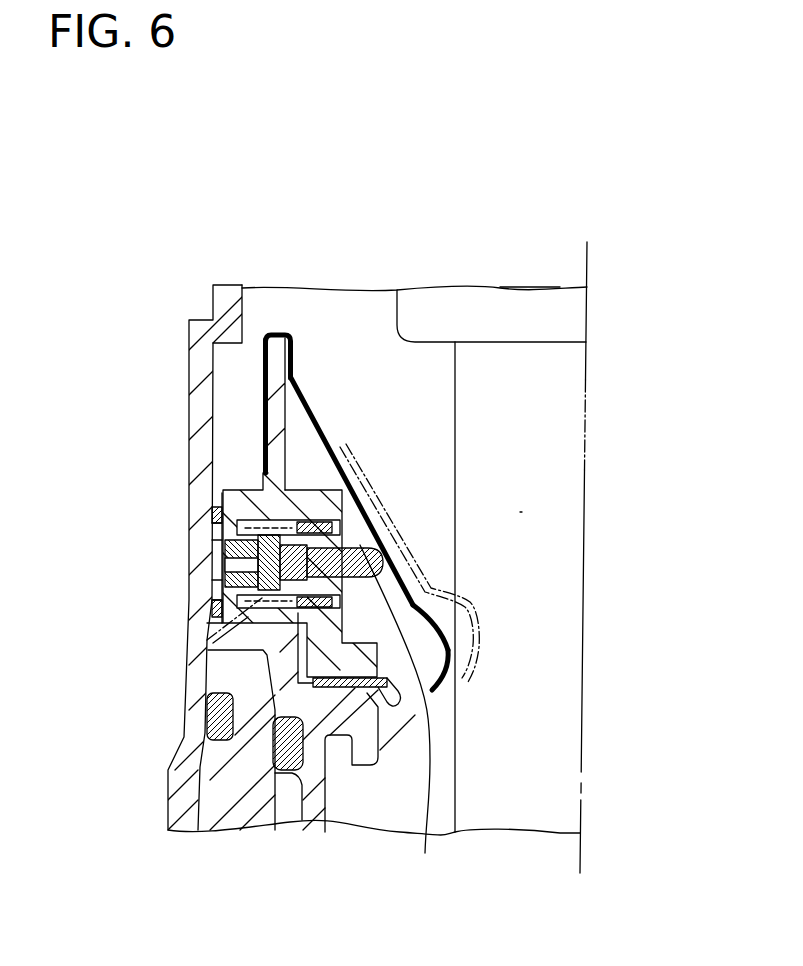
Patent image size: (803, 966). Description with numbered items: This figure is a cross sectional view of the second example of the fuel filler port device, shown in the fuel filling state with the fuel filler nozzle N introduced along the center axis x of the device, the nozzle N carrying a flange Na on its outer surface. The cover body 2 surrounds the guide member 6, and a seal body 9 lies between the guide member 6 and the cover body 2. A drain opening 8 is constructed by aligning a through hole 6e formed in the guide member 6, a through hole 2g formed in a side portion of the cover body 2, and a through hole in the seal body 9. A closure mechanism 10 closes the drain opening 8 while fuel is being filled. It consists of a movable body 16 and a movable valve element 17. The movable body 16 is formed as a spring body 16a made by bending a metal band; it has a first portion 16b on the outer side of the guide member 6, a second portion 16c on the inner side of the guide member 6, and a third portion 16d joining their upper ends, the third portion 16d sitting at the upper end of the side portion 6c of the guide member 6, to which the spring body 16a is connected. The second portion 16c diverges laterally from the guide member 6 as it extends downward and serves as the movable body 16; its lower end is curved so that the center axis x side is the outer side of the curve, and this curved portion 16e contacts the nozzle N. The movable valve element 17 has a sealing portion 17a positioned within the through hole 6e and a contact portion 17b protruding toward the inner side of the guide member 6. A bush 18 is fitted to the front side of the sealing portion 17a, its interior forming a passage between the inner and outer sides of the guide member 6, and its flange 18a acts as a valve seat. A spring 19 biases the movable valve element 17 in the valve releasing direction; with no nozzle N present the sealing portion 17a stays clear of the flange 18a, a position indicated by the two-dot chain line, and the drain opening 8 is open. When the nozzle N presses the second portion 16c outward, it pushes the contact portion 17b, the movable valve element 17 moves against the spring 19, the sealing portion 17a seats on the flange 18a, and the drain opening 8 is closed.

The cover body 2 is at (212, 318).
The through hole 2g is at (197, 521).
The guide member 6 is at (300, 521).
The side portion 6c is at (277, 372).
The through hole 6e is at (286, 490).
The drain opening 8 is at (197, 548).
The seal body 9 is at (220, 486).
The closure mechanism 10 is at (378, 413).
The movable body 16 is at (449, 444).
The spring body 16a is at (383, 508).
The first portion 16b is at (259, 337).
The second portion 16c is at (433, 593).
The third portion 16d is at (287, 332).
The curved portion 16e is at (450, 654).
The movable valve element 17 is at (340, 747).
The sealing portion 17a is at (300, 630).
The contact portion 17b is at (409, 719).
The bush 18 is at (226, 552).
The flange 18a is at (268, 592).
The spring 19 is at (207, 640).
The fuel filler nozzle N is at (520, 512).
The flange Na is at (518, 297).
The center axis x is at (587, 258).